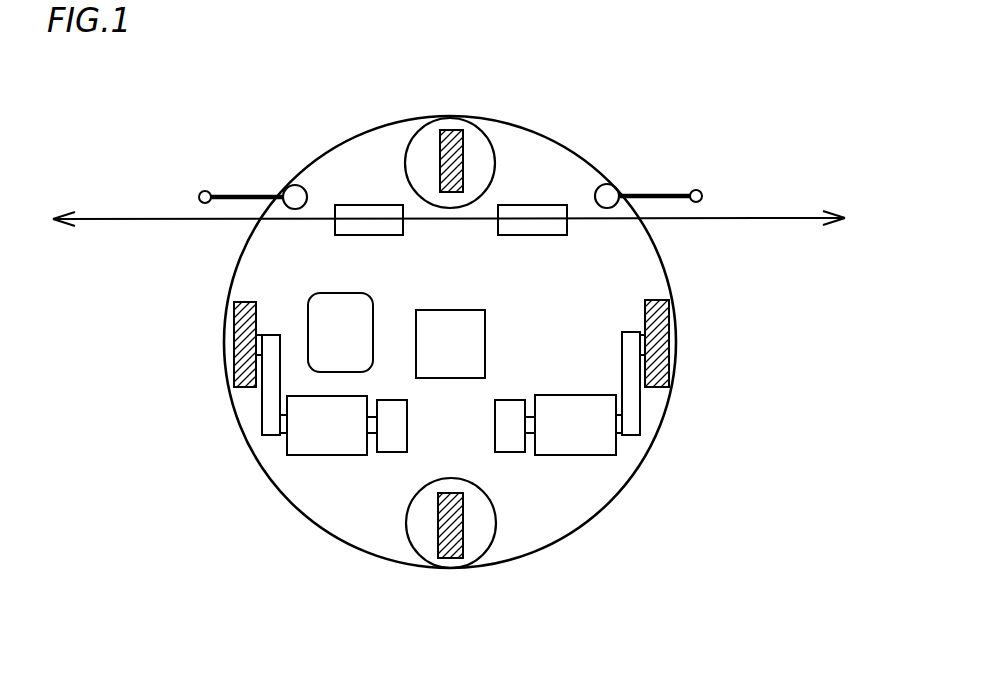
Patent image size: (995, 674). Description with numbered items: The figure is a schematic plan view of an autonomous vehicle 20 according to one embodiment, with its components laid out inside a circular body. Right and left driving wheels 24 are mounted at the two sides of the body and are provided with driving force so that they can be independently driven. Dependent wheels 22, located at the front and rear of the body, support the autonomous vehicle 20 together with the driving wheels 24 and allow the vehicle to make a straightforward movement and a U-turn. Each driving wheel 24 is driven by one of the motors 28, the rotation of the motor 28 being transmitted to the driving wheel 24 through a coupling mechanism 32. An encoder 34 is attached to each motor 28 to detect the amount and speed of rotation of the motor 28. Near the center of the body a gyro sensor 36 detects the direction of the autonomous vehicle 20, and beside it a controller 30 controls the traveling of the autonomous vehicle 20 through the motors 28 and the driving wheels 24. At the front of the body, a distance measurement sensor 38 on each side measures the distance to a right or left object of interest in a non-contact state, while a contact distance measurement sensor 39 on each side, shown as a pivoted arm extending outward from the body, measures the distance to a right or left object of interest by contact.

The autonomous vehicle 20 is at (652, 112).
The dependent wheels 22 is at (493, 140).
The driving wheels 24 is at (234, 342).
The motors 28 is at (325, 457).
The controller 30 is at (325, 293).
The coupling mechanism 32 is at (262, 405).
The encoder 34 is at (390, 455).
The gyro sensor 36 is at (485, 322).
The distance measurement sensor 38 is at (368, 205).
The contact distance measurement sensor 39 is at (248, 193).